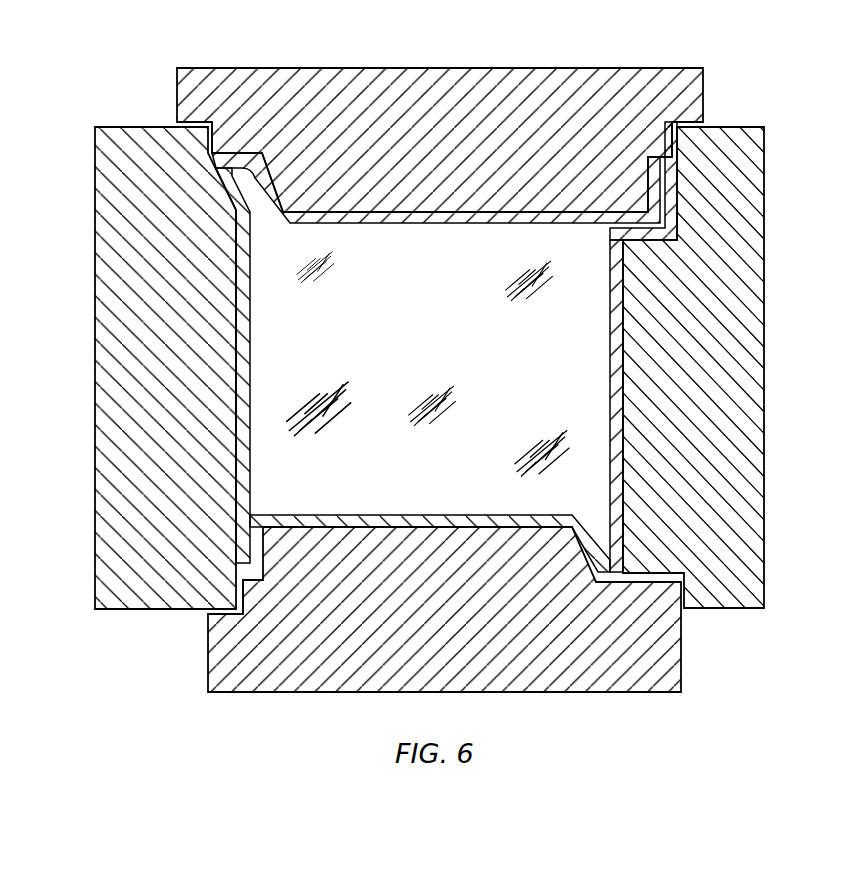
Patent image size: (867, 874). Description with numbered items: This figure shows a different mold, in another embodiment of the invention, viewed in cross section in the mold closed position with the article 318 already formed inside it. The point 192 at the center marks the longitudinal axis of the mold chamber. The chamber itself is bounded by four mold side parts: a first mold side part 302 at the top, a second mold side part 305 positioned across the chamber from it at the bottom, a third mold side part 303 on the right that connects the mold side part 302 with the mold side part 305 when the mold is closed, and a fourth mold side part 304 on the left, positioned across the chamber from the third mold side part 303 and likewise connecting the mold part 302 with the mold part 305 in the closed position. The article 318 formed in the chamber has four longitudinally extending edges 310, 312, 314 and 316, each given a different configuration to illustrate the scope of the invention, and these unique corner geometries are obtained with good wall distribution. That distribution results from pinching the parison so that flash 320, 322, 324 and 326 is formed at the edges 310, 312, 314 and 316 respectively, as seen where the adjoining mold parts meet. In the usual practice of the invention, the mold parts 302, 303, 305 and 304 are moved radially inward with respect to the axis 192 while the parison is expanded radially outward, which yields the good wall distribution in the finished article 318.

The longitudinal axis of the mold chamber 192 is at (433, 380).
The first mold side part 302 is at (472, 64).
The third mold side part 303 is at (765, 296).
The fourth mold side part 304 is at (95, 512).
The second mold side part 305 is at (368, 693).
The longitudinally extending edge 310 is at (668, 165).
The longitudinally extending edge 312 is at (608, 568).
The longitudinally extending edge 314 is at (247, 504).
The longitudinally extending edge 316 is at (248, 173).
The article 318 is at (602, 372).
The flash 320 is at (672, 130).
The flash 322 is at (640, 583).
The flash 324 is at (247, 594).
The flash 326 is at (227, 125).